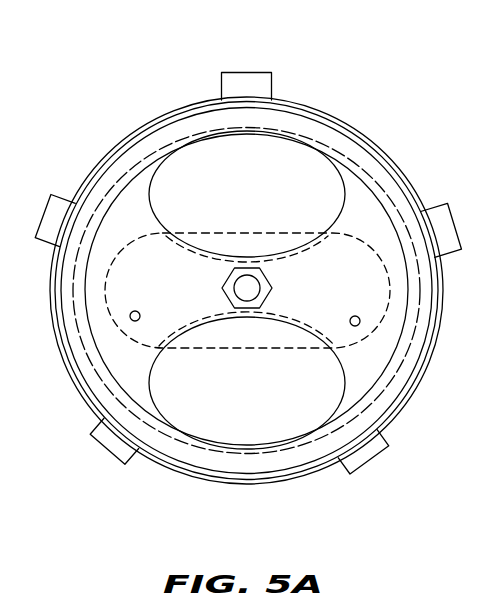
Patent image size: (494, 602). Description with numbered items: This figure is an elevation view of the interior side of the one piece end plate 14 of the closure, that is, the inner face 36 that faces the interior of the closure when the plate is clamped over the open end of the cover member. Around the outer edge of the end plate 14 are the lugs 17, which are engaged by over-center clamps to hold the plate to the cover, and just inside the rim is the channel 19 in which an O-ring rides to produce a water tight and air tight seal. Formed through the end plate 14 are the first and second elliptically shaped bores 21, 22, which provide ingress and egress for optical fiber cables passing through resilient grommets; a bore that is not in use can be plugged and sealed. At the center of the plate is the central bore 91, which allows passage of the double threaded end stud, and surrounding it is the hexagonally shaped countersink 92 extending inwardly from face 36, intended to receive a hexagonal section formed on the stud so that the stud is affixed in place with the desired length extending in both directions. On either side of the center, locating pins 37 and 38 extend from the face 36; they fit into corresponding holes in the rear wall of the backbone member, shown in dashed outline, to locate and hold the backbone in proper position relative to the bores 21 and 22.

The end plate 14 is at (117, 146).
The lugs 17 is at (252, 80).
The channel 19 is at (186, 121).
The first elliptically shaped bore 21 is at (200, 420).
The second elliptically shaped bore 22 is at (296, 152).
The inner face 36 is at (364, 204).
The locating pin 37 is at (131, 320).
The locating pin 38 is at (358, 325).
The central bore 91 is at (263, 296).
The hexagonally shaped countersink 92 is at (222, 284).